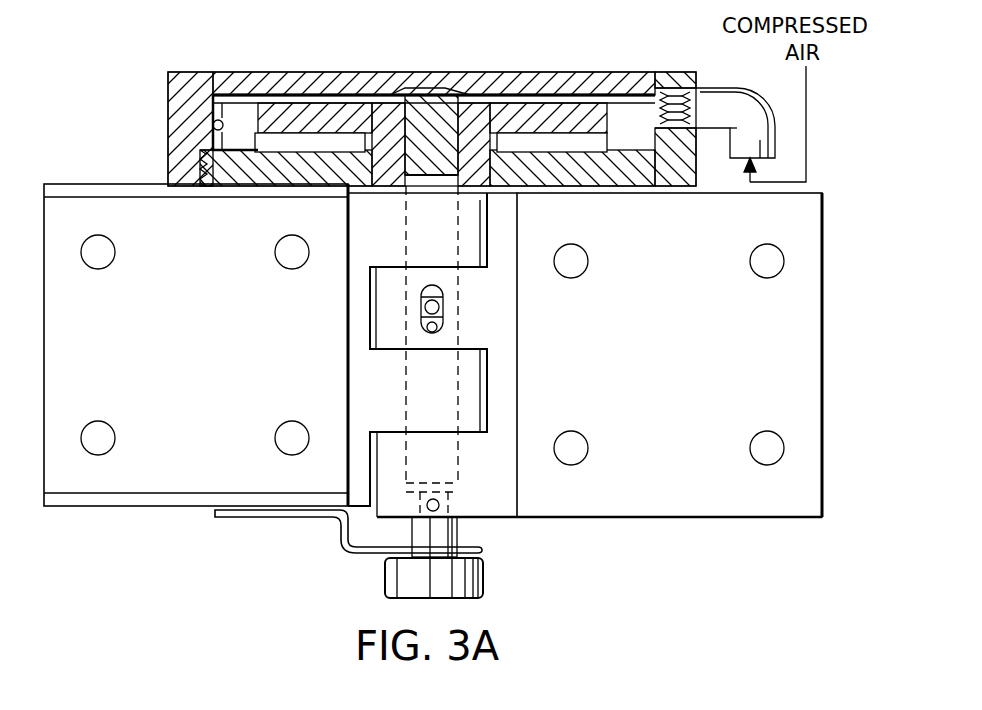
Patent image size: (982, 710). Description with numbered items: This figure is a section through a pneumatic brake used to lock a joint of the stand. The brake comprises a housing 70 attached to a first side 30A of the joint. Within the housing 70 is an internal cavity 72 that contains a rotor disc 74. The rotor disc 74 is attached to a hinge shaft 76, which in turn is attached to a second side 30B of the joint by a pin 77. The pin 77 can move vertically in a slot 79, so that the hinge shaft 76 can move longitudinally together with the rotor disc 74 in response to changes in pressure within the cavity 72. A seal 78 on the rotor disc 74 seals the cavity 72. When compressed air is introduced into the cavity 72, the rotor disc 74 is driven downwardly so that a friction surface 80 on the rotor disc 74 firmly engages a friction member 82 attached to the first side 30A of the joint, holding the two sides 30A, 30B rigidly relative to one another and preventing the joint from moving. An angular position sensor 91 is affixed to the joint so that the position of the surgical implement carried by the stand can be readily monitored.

The housing 70 is at (597, 72).
The internal cavity 72 is at (338, 100).
The rotor disc 74 is at (515, 108).
The hinge shaft 76 is at (464, 115).
The pin 77 is at (440, 308).
The seal 78 is at (212, 118).
The slot 79 is at (445, 325).
The friction surface 80 is at (258, 115).
The friction member 82 is at (210, 162).
The first side of joint 30A is at (128, 220).
The second side of joint 30B is at (727, 502).
The angular position sensor 91 is at (485, 578).